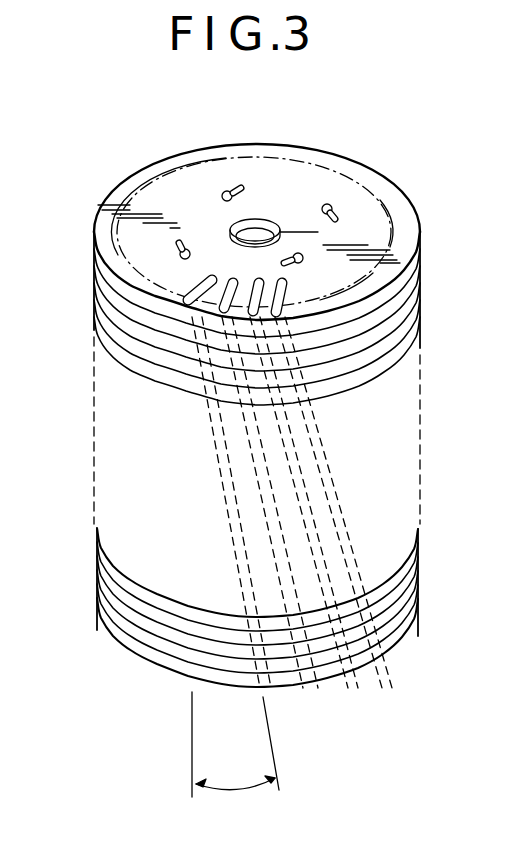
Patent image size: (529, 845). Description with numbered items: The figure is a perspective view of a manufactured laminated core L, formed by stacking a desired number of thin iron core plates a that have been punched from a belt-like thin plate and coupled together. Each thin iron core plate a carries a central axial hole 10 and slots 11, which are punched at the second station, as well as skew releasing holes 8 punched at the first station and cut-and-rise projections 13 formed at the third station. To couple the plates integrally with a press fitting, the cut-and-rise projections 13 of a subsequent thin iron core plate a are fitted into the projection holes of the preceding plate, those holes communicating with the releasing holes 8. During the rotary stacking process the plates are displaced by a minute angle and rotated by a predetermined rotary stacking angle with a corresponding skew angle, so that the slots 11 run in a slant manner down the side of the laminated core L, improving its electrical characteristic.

The laminated core L is at (403, 209).
The thin iron core plate a is at (420, 293).
The axial hole 10 is at (262, 219).
The skew releasing hole 8 is at (223, 193).
The cut-and-rise projection 13 is at (237, 189).
The slot 11 is at (183, 294).